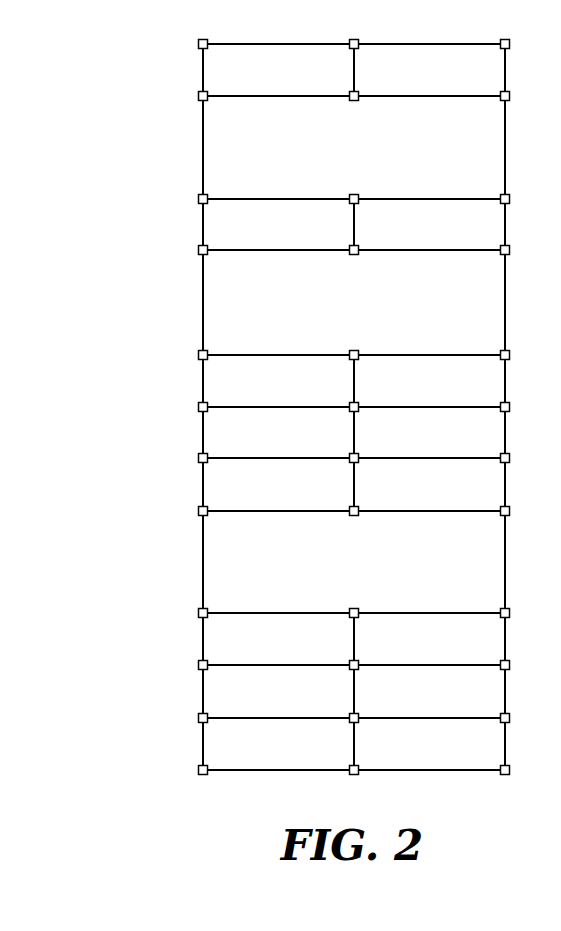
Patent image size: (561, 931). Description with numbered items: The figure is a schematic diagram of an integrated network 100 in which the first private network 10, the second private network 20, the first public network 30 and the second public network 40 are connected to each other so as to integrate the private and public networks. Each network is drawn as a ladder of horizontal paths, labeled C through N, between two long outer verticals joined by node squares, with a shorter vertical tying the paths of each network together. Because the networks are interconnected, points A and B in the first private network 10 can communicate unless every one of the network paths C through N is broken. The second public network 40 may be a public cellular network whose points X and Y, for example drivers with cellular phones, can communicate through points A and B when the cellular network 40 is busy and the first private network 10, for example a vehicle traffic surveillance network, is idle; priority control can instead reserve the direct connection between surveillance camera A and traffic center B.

The integrated network 100 is at (147, 217).
The first private network 10 is at (414, 86).
The second private network 20 is at (414, 238).
The first public network 30 is at (414, 446).
The second public network 40 is at (413, 706).